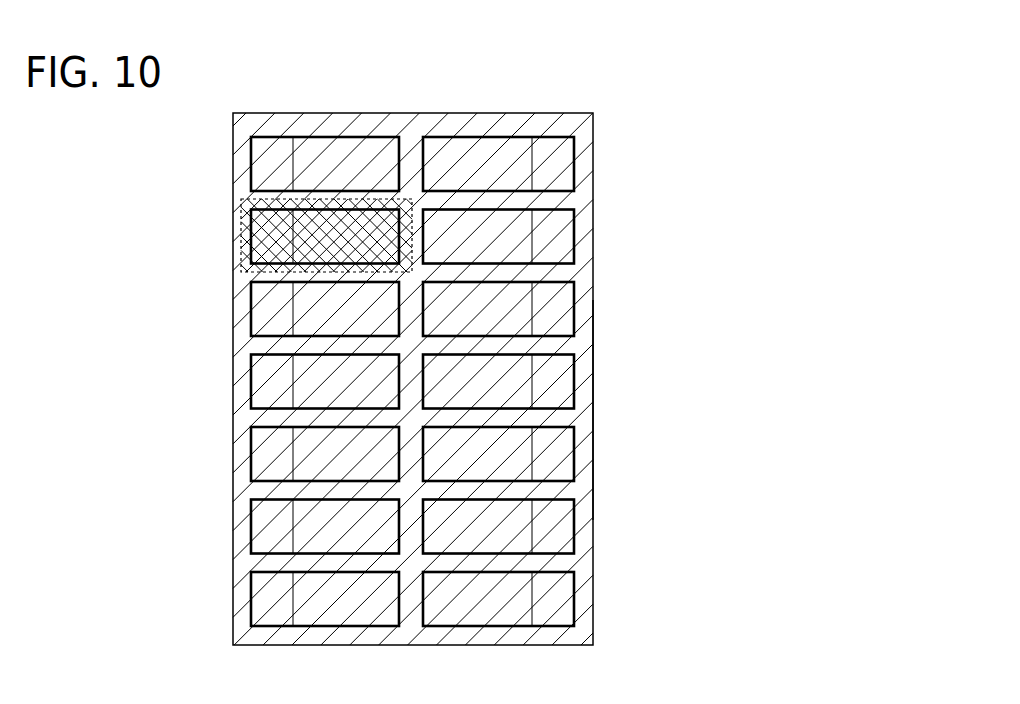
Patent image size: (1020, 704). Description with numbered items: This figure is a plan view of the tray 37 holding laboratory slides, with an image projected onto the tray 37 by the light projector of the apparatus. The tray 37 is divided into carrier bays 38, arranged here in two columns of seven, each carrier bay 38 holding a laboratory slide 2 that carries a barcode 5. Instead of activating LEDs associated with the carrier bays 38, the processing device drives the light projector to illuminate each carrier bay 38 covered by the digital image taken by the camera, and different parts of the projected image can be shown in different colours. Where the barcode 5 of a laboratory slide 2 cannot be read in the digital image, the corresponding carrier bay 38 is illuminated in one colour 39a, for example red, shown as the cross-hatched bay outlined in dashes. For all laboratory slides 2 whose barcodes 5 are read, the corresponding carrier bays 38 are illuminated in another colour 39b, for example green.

The tray 37 is at (405, 94).
The carrier bay 38 is at (235, 181).
The laboratory slide 2 is at (313, 222).
The barcode 5 is at (250, 213).
The one colour 39a is at (240, 262).
The another colour 39b is at (592, 407).